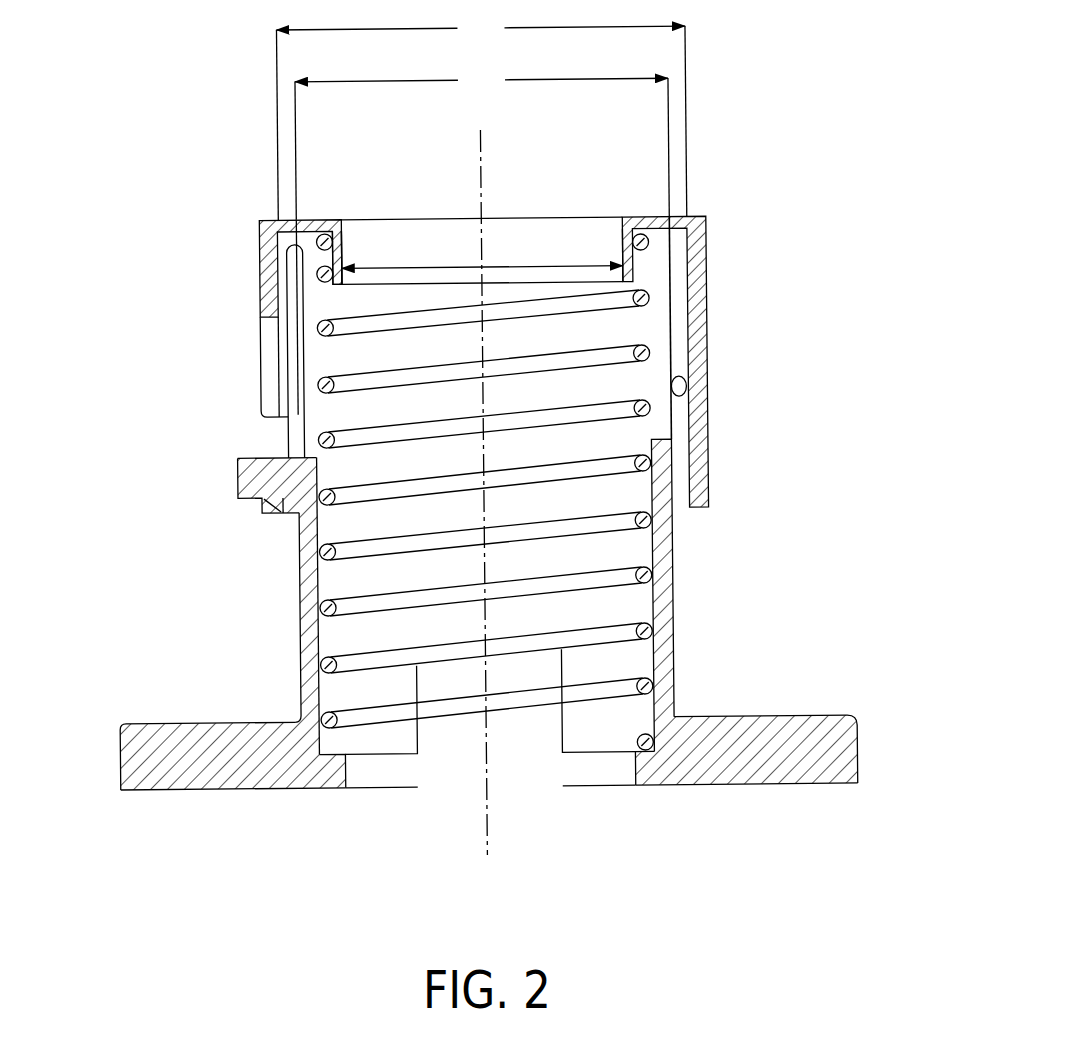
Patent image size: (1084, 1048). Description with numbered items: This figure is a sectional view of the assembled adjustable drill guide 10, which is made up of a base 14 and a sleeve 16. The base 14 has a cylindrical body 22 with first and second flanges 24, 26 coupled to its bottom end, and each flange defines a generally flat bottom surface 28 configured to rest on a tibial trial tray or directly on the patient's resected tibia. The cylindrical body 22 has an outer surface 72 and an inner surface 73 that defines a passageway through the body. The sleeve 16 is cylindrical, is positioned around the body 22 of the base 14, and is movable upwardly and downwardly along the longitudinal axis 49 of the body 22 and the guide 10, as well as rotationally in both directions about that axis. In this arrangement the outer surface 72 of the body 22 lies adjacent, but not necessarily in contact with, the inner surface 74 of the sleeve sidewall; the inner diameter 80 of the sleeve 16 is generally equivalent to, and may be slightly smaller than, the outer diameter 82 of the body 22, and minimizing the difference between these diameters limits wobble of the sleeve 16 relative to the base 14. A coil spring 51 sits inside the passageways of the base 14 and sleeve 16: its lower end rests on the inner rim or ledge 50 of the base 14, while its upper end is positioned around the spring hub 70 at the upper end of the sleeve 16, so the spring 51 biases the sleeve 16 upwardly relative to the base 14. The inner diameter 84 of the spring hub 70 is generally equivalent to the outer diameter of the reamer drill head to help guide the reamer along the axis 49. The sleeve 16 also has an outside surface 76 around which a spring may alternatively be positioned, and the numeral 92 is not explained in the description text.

The drill guide 10 is at (797, 143).
The base 14 is at (222, 527).
The sleeve 16 is at (251, 247).
The cylindrical body 22 is at (666, 613).
The first flange 24 is at (119, 741).
The second flange 26 is at (856, 741).
The flat bottom surface 28 is at (187, 787).
The longitudinal axis 49 is at (485, 143).
The inner rim or ledge 50 is at (335, 740).
The spring 51 is at (566, 313).
The spring hub 70 is at (345, 250).
The outer surface 72 is at (673, 570).
The inner surface 73 is at (321, 588).
The inner surface 74 is at (689, 398).
The outside surface 76 is at (712, 320).
The inner diameter 80 is at (481, 115).
The outer diameter 82 is at (482, 141).
The inner diameter 84 is at (574, 266).
The slot 92 is at (313, 216).